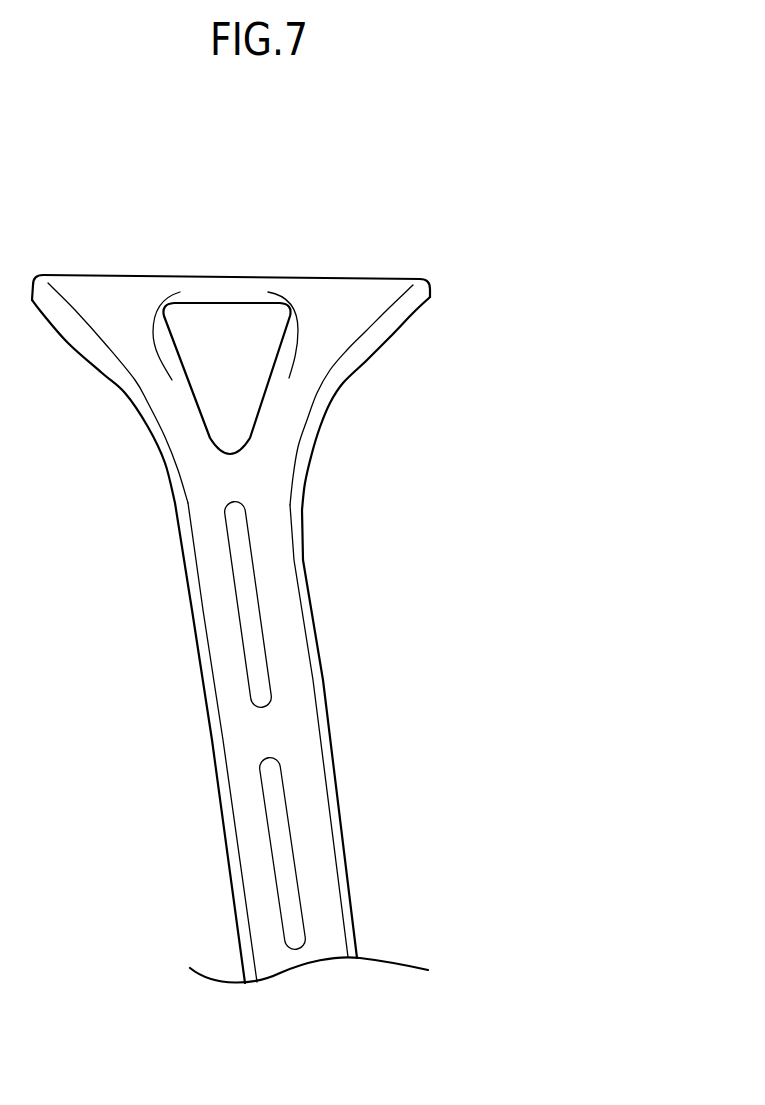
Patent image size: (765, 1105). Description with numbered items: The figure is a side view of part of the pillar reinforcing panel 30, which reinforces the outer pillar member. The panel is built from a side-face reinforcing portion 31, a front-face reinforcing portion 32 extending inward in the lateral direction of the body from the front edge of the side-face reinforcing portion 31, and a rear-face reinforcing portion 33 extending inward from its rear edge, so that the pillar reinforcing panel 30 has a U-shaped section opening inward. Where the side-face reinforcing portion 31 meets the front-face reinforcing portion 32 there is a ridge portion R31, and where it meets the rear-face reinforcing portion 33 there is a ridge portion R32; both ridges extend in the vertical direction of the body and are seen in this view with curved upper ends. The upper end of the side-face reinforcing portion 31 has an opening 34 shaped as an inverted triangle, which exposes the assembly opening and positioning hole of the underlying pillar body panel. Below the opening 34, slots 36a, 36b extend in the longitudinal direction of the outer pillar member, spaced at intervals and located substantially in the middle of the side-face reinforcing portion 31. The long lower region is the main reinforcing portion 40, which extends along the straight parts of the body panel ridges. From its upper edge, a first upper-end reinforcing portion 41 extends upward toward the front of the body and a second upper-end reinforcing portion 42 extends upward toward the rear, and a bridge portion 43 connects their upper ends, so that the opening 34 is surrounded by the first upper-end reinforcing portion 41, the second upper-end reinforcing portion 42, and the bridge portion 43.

The pillar reinforcing panel 30 is at (384, 222).
The side-face reinforcing portion 31 is at (321, 952).
The front-face reinforcing portion 32 is at (346, 902).
The rear-face reinforcing portion 33 is at (250, 913).
The opening 34 is at (178, 365).
The slot 36a is at (250, 620).
The slot 36b is at (280, 855).
The main reinforcing portion 40 is at (281, 727).
The first upper-end reinforcing portion 41 is at (324, 392).
The second upper-end reinforcing portion 42 is at (146, 393).
The bridge portion 43 is at (231, 288).
The ridge portion R31 is at (323, 778).
The ridge portion R32 is at (230, 790).